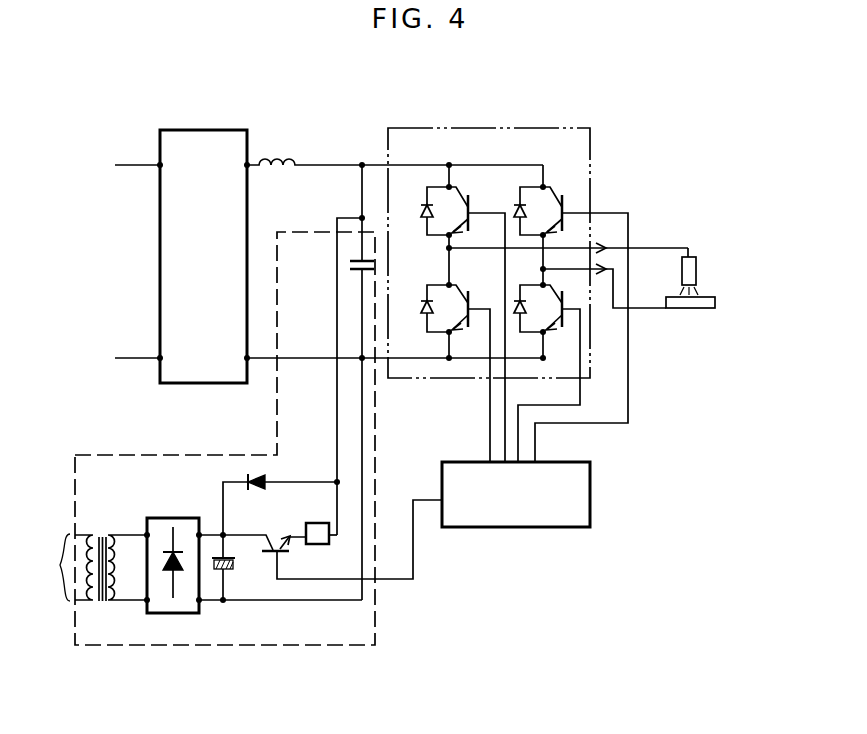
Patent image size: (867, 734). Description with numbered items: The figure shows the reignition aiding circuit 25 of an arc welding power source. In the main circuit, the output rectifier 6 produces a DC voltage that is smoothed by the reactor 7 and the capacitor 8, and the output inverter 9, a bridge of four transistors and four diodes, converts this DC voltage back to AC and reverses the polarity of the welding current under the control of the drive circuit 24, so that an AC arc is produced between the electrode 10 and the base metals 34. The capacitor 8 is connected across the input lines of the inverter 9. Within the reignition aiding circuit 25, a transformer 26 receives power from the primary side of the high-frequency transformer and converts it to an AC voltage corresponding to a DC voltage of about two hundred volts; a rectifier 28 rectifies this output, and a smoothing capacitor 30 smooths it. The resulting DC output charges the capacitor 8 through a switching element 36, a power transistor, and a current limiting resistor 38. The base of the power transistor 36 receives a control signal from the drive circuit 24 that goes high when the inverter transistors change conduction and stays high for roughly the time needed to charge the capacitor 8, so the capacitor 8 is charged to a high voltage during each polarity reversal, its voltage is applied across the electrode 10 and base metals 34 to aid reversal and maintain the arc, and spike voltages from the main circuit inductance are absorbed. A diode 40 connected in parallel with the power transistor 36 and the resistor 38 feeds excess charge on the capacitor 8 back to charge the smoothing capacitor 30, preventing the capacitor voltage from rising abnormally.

The output rectifier 6 is at (203, 130).
The reactor 7 is at (278, 158).
The capacitor 8 is at (352, 270).
The output inverter 9 is at (590, 137).
The output terminal 10 is at (688, 248).
The base metals 34 is at (706, 308).
The drive circuit 24 is at (590, 488).
The reignition aiding circuit 25 is at (210, 645).
The transformer 26 is at (107, 604).
The rectifier 28 is at (170, 518).
The smoothing capacitor 30 is at (237, 566).
The switching element 36 is at (280, 540).
The current limiting resistor 38 is at (317, 545).
The diode 40 is at (263, 473).